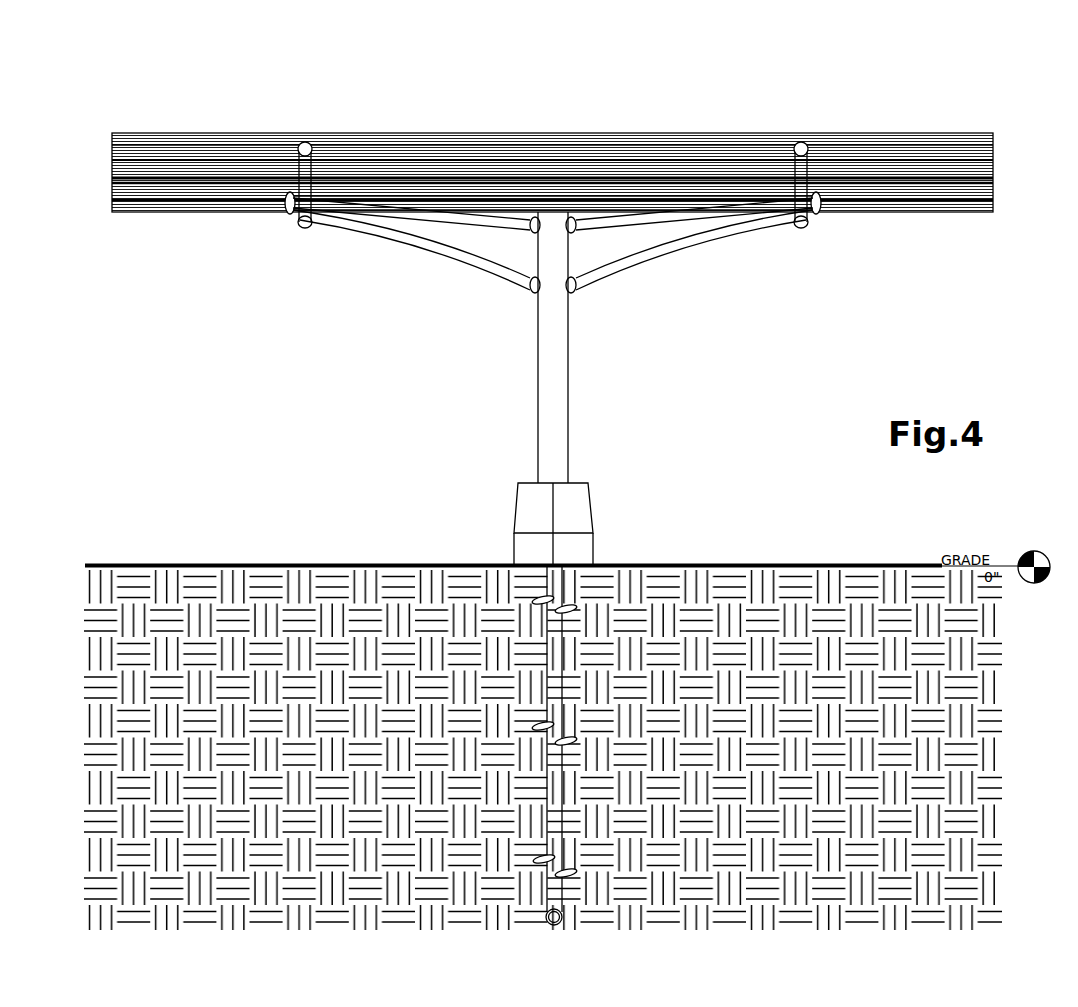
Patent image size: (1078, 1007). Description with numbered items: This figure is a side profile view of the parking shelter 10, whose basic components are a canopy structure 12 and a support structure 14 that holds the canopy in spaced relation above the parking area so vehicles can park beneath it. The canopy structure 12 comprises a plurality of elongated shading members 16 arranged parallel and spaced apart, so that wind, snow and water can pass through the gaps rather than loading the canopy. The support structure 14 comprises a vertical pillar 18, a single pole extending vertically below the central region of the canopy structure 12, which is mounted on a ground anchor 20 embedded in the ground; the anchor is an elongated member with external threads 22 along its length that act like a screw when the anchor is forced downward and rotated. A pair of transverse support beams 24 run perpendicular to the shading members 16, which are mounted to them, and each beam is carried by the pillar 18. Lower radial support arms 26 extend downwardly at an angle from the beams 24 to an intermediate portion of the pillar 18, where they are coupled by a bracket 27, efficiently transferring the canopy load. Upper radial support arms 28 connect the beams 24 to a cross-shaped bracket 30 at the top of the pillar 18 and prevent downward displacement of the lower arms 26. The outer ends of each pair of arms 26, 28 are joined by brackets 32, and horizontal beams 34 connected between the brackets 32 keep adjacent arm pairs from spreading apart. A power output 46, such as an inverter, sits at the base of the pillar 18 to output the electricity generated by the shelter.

The parking shelter 10 is at (552, 118).
The canopy structure 12 is at (552, 118).
The support structure 14 is at (557, 327).
The elongated shading members 16 is at (412, 152).
The vertical pillar 18 is at (561, 440).
The ground anchor 20 is at (567, 790).
The external threads 22 is at (584, 596).
The transverse support beam 24 is at (301, 150).
The lower radial support arms 26 is at (385, 241).
The bracket 27 is at (562, 296).
The upper radial support arms 28 is at (478, 226).
The cross-shaped bracket 30 is at (567, 214).
The brackets 32 is at (285, 213).
The horizontal beams 34 is at (397, 195).
The power output 46 is at (585, 497).